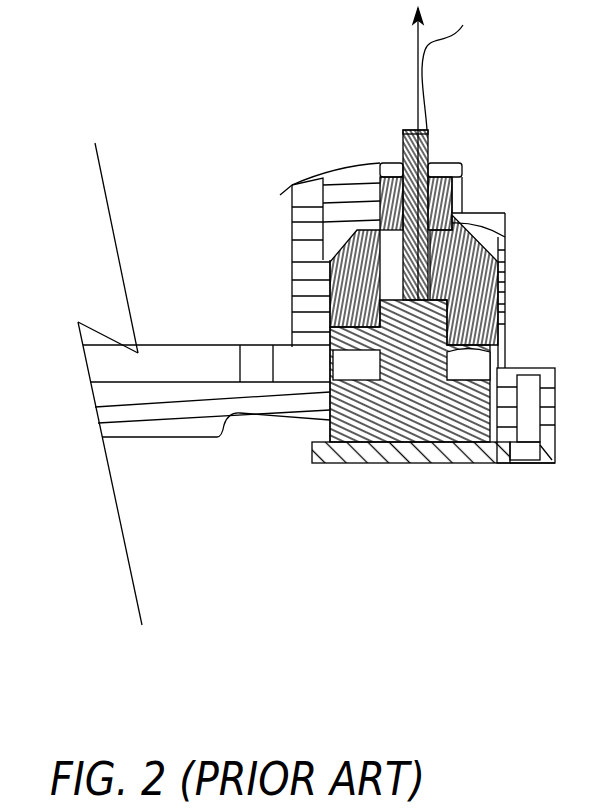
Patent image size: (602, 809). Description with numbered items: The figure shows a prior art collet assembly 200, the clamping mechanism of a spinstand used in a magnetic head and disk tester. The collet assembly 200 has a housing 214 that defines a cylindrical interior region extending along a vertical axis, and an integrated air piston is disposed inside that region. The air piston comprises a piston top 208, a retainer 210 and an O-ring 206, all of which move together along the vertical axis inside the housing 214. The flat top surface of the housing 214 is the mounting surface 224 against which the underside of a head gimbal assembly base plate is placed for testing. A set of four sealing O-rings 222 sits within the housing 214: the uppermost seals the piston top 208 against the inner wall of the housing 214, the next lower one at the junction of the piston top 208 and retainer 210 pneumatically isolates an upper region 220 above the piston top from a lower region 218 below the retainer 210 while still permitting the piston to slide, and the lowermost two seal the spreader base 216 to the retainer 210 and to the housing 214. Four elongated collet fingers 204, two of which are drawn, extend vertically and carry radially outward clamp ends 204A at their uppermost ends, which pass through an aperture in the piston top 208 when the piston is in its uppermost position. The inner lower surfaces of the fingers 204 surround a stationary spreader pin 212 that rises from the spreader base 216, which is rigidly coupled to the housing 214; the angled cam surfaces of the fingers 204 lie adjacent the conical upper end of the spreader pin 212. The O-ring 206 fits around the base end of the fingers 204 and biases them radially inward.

The collet assembly 200 is at (330, 141).
The collet fingers 204 is at (421, 128).
The clamp ends 204A is at (405, 133).
The O-ring 206 is at (460, 222).
The piston top 208 is at (330, 278).
The retainer 210 is at (330, 311).
The spreader pin 212 is at (335, 205).
The housing 214 is at (507, 275).
The spreader base 216 is at (412, 440).
The lower region 218 is at (343, 363).
The upper region 220 is at (490, 238).
The sealing O-rings 222 is at (465, 193).
The mounting surface 224 is at (378, 162).